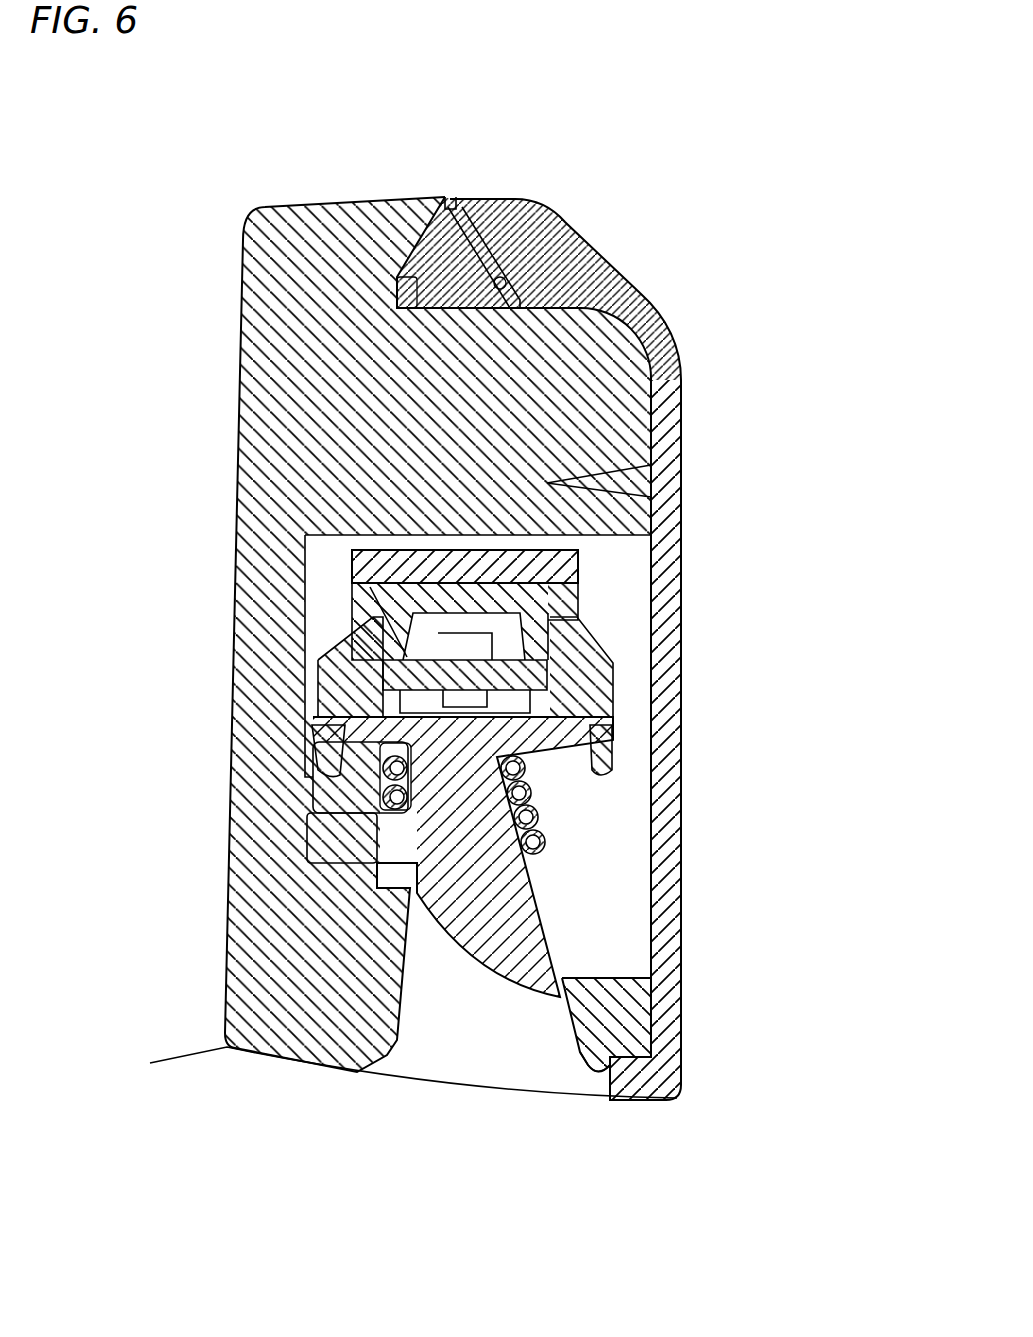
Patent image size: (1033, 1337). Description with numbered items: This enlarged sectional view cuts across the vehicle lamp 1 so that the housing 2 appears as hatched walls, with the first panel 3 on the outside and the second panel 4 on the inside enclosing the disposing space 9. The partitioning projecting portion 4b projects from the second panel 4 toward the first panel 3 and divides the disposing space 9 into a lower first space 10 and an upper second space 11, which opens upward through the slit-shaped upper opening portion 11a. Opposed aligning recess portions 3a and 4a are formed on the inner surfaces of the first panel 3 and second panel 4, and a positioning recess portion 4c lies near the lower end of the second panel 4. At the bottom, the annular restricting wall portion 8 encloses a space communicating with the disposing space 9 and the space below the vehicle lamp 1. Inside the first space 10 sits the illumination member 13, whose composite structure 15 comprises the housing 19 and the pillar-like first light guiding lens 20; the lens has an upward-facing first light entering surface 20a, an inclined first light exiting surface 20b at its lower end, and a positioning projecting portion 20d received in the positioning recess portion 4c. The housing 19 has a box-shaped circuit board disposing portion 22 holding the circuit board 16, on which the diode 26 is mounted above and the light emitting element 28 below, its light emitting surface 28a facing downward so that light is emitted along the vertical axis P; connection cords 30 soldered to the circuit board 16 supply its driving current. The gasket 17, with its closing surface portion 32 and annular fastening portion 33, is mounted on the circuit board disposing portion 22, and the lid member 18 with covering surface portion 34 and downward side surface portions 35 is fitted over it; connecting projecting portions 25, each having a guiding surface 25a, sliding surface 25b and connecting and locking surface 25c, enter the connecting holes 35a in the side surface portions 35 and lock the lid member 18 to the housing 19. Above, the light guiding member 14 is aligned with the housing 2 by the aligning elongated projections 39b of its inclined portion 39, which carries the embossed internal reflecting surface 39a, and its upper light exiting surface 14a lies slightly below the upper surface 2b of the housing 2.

The vehicle lamp 1 is at (205, 122).
The housing 2 is at (133, 1078).
The upper surface of the housing 2b is at (310, 205).
The first panel 3 is at (682, 840).
The aligning recess portion 3a is at (575, 250).
The second panel 4 is at (243, 345).
The aligning recess portion 4a is at (405, 290).
The partitioning projecting portion 4b is at (577, 352).
The positioning recess portion 4c is at (400, 892).
The restricting wall portion 8 is at (580, 1055).
The disposing space 9 is at (601, 952).
The first space 10 is at (320, 560).
The second space 11 is at (470, 250).
The upper opening portion 11a is at (447, 203).
The illumination member 13 is at (732, 450).
The light guiding member 14 is at (507, 138).
The light exiting surface 14a is at (452, 205).
The composite structure 15 is at (325, 680).
The circuit board 16 is at (345, 650).
The gasket 17 is at (330, 580).
The lid member 18 is at (360, 540).
The housing 19 is at (575, 622).
The first light guiding lens 20 is at (507, 980).
The first light entering surface 20a is at (610, 652).
The first light exiting surface 20b is at (450, 915).
The positioning projecting portion 20d is at (400, 862).
The circuit board disposing portion 22 is at (600, 630).
The connecting projecting portion 25 is at (590, 683).
The guiding surface 25a is at (603, 645).
The sliding surface 25b is at (600, 690).
The connecting and locking surface 25c is at (603, 723).
The diode 26 is at (405, 545).
The light emitting element 28 is at (343, 783).
The light emitting surface 28a is at (315, 800).
The connection cord 30 is at (548, 838).
The closing surface portion 32 is at (547, 483).
The annular fastening portion 33 is at (593, 643).
The covering surface portion 34 is at (395, 540).
The side surface portion 35 is at (620, 750).
The connecting hole 35a is at (603, 680).
The inclined portion 39 is at (437, 205).
The embossed internal reflecting surface 39a is at (560, 282).
The aligning elongated projection 39b is at (505, 275).
The axis of light P is at (465, 700).